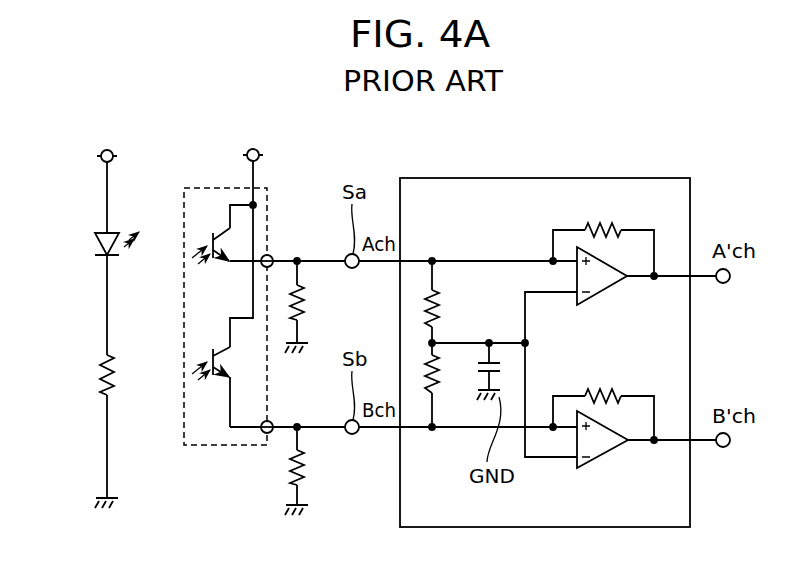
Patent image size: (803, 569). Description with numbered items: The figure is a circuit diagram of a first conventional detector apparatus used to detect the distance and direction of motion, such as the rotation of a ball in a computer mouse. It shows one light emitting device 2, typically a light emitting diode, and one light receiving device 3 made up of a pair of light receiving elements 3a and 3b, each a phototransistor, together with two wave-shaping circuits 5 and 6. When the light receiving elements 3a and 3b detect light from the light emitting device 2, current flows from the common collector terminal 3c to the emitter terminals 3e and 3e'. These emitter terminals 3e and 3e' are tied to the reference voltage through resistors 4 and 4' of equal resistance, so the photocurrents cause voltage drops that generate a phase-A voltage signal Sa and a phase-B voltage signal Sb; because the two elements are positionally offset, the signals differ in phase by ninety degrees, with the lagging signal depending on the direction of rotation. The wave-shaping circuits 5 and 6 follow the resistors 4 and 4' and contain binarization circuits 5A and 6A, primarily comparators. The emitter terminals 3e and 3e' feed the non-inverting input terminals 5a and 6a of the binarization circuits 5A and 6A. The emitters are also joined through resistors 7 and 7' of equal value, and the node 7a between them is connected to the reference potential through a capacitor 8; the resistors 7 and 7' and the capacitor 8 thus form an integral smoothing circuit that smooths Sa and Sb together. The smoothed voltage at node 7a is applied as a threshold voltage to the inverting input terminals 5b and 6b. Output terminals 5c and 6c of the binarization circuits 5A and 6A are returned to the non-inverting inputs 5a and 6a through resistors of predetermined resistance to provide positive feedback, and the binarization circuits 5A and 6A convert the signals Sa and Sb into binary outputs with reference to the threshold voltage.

The light emitting device 2 is at (92, 238).
The light receiving device 3 is at (247, 295).
The light receiving element 3a is at (210, 268).
The light receiving element 3b is at (210, 381).
The collector terminal 3c is at (257, 204).
The emitter terminal 3e is at (290, 234).
The emitter terminal 3e' is at (293, 400).
The resistor 4 is at (313, 306).
The resistor 4' is at (317, 471).
The wave-shaping circuit 5 is at (643, 255).
The non-inverting input terminal 5a is at (565, 252).
The inverting input terminal 5b is at (573, 297).
The output terminal 5c is at (637, 272).
The binarization circuit 5A is at (610, 282).
The wave-shaping circuit 6 is at (643, 426).
The non-inverting input terminal 6a is at (566, 420).
The inverting input terminal 6b is at (573, 462).
The output terminal 6c is at (637, 437).
The binarization circuit 6A is at (612, 447).
The resistor 7 is at (454, 300).
The resistor 7' is at (403, 375).
The node 7a is at (437, 342).
The capacitor 8 is at (476, 366).